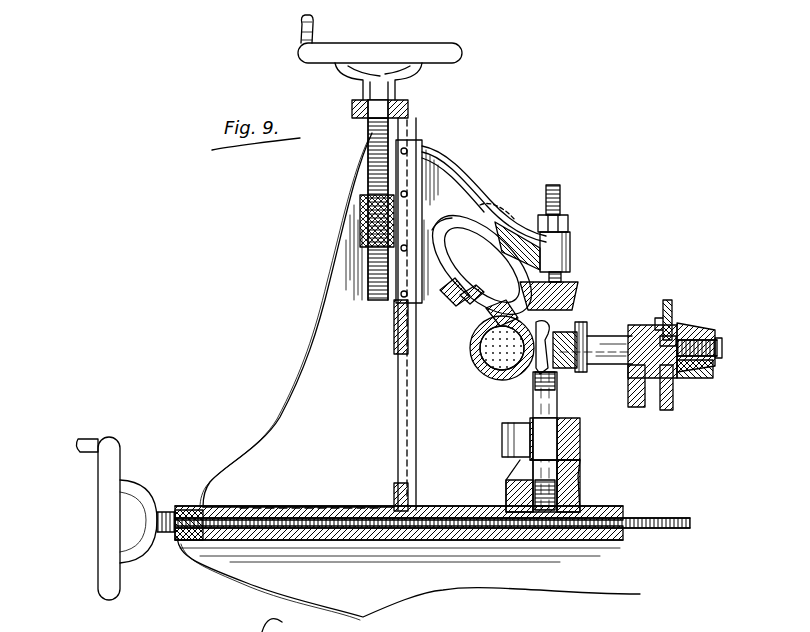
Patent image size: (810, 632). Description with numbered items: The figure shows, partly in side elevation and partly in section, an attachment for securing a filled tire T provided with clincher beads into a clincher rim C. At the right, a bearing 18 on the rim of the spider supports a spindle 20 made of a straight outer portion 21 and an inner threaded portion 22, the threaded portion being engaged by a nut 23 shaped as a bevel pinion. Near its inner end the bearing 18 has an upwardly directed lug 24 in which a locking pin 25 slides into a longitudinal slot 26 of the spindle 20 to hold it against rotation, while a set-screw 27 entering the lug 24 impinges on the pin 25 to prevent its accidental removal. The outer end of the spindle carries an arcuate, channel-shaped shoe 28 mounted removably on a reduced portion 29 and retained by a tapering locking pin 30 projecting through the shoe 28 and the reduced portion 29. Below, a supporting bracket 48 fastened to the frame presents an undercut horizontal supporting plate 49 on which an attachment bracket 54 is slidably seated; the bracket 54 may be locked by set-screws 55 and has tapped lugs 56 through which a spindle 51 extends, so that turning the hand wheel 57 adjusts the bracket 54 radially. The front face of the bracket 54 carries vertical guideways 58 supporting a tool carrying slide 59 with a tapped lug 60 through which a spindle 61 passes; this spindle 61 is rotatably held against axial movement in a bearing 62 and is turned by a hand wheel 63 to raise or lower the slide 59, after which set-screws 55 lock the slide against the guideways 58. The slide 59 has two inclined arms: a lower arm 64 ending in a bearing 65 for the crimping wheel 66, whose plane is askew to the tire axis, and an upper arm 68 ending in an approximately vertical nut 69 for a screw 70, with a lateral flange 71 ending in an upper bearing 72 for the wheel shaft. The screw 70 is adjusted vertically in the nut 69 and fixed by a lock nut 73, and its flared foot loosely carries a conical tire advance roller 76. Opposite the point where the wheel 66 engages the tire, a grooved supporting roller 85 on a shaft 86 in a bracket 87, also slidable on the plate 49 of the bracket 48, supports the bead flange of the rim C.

The bearing 18 is at (604, 340).
The spindle 20 is at (722, 357).
The outer portion 21 is at (622, 354).
The threaded portion 22 is at (722, 344).
The nut 23 is at (704, 368).
The lug 24 is at (674, 336).
The locking pin 25 is at (692, 328).
The longitudinal slot 26 is at (714, 338).
The set-screw 27 is at (664, 318).
The arcuate shoe 28 is at (562, 378).
The reduced portion 29 is at (584, 344).
The locking pin 30 is at (584, 330).
The bracket 48 is at (444, 588).
The horizontal supporting plate 49 is at (188, 540).
The spindle 51 is at (690, 526).
The bracket 54 is at (312, 372).
The set-screws 55 is at (406, 196).
The tapped lug 56 is at (254, 508).
The hand wheel 57 is at (120, 447).
The vertical guideways 58 is at (396, 344).
The tool carrying slide 59 is at (414, 348).
The tapped lug 60 is at (360, 242).
The spindle 61 is at (368, 282).
The bearing 62 is at (408, 105).
The hand wheel 63 is at (312, 63).
The lower arm 64 is at (452, 306).
The bearing 65 is at (490, 320).
The crimping wheel 66 is at (452, 244).
The upper arm 68 is at (488, 228).
The nut 69 is at (572, 246).
The screw 70 is at (560, 208).
The lateral flange 71 is at (444, 240).
The upper bearing 72 is at (518, 230).
The lock nut 73 is at (568, 224).
The tire advance roller 76 is at (572, 292).
The supporting roller 85 is at (545, 392).
The shaft 86 is at (520, 436).
The bracket 87 is at (512, 462).
The tire T is at (478, 366).
The clincher rim C is at (538, 384).